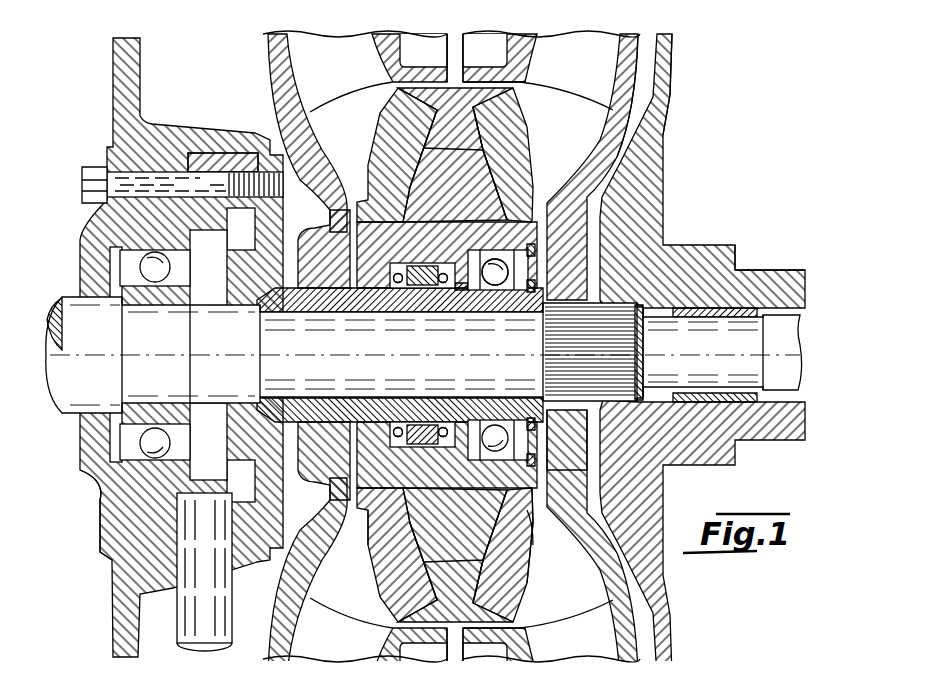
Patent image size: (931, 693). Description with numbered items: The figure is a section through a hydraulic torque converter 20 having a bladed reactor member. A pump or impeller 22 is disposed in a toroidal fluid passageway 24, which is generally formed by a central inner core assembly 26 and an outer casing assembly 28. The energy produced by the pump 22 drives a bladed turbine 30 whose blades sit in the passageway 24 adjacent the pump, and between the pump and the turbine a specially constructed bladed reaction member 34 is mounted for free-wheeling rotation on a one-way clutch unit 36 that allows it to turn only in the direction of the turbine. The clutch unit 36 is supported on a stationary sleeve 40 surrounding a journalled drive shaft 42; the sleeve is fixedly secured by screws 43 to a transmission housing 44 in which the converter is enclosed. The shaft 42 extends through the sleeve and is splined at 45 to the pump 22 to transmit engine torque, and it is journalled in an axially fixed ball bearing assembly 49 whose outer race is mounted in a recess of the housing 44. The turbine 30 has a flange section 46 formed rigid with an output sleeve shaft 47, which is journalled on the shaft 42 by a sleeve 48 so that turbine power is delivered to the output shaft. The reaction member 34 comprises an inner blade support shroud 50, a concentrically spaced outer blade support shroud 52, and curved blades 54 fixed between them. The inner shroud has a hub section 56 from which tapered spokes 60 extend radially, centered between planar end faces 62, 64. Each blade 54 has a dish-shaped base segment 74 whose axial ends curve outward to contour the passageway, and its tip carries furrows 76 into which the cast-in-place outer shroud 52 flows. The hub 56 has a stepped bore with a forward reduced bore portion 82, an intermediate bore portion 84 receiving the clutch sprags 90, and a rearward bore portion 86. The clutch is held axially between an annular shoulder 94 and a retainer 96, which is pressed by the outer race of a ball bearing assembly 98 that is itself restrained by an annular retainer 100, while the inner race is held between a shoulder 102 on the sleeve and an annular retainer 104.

The torque converter 20 is at (678, 164).
The pump or impeller 22 is at (603, 36).
The toroidal fluid passageway 24 is at (547, 113).
The central inner core assembly 26 is at (459, 27).
The outer casing assembly 28 is at (641, 70).
The bladed turbine 30 is at (318, 58).
The bladed reaction member 34 is at (545, 154).
The one-way clutch unit 36 is at (428, 284).
The stationary sleeve 40 is at (421, 433).
The drive shaft 42 is at (262, 368).
The screws 43 is at (92, 182).
The transmission housing 44 is at (128, 88).
The splines 45 is at (603, 305).
The flange section 46 is at (670, 100).
The output sleeve shaft 47 is at (770, 271).
The sleeve 48 is at (720, 310).
The ball bearing assembly 49 is at (98, 486).
The inner blade support shroud 50 is at (446, 500).
The outer blade support shroud 52 is at (406, 100).
The curved blades 54 is at (382, 157).
The hub section 56 is at (546, 462).
The spokes 60 is at (483, 160).
The planar end face 62 is at (357, 461).
The planar end face 64 is at (535, 468).
The base segment 74 is at (368, 503).
The furrows 76 is at (487, 103).
The forward reduced bore portion 82 is at (324, 249).
The intermediate bore portion 84 is at (431, 263).
The rearward bore portion 86 is at (490, 254).
The sprags 90 is at (433, 445).
The annular shoulder 94 is at (410, 264).
The retainer 96 is at (474, 240).
The ball bearing assembly 98 is at (507, 437).
The annular retainer 100 is at (537, 249).
The shoulder 102 is at (470, 290).
The annular retainer 104 is at (540, 287).